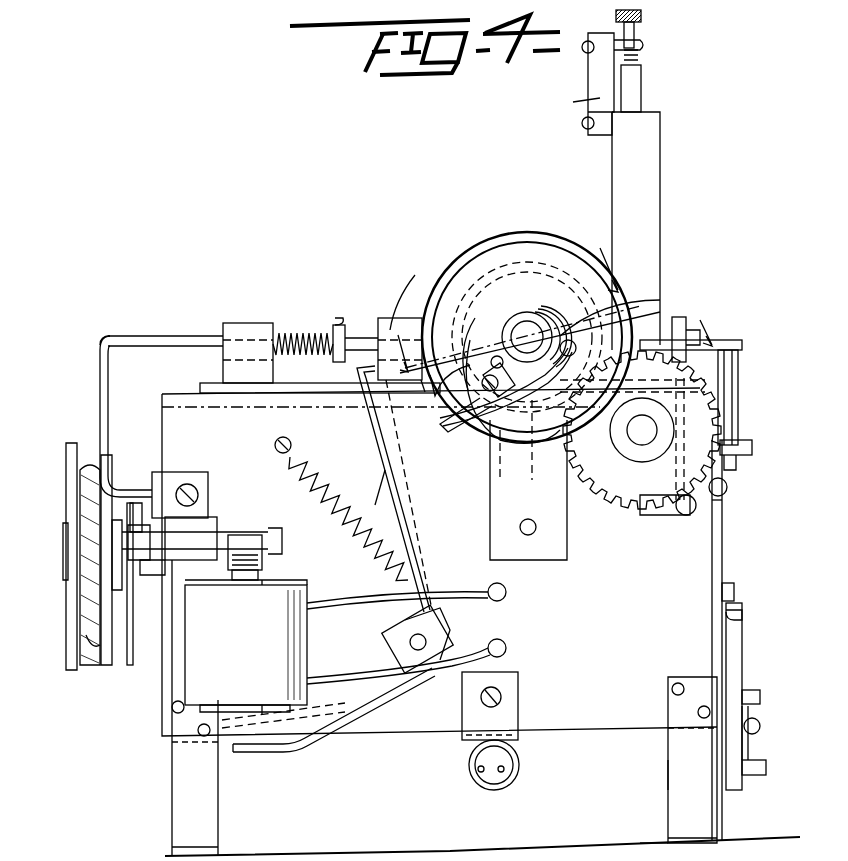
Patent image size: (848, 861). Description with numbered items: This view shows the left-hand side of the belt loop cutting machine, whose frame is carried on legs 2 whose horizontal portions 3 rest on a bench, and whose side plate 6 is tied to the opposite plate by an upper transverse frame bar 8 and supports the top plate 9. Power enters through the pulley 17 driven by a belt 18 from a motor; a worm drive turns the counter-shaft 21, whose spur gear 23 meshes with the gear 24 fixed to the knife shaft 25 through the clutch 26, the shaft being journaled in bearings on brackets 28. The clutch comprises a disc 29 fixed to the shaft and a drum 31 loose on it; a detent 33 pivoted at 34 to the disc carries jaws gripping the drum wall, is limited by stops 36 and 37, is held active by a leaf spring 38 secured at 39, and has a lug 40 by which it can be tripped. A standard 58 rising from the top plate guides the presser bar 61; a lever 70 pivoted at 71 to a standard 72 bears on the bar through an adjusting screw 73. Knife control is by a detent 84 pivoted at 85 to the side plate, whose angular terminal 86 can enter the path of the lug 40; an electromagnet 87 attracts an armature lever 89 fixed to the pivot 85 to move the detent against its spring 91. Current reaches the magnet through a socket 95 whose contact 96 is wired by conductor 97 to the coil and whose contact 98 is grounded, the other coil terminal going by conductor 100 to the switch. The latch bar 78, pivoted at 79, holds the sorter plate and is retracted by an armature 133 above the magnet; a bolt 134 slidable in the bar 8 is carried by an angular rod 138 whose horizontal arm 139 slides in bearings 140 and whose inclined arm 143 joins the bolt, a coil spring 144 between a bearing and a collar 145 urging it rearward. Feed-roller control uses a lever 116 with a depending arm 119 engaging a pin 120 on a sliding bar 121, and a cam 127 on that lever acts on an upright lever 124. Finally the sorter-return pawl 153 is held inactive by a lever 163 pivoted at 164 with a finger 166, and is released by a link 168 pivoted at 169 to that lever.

The legs 2 is at (668, 804).
The horizontal portions 3 is at (648, 831).
The side plate 6 is at (618, 730).
The upper front transverse bar 8 is at (166, 470).
The top plate 9 is at (528, 298).
The pulley 17 is at (66, 652).
The belt 18 is at (94, 650).
The counter-shaft 21 is at (640, 432).
The spur gear 23 is at (630, 500).
The gear 24 is at (498, 250).
The knife shaft 25 is at (530, 332).
The clutch 26 is at (430, 278).
The bracket 28 is at (492, 530).
The disc 29 is at (548, 258).
The drum 31 is at (523, 234).
The detent 33 is at (480, 426).
The pivot 34 is at (511, 376).
The stop 36 is at (502, 335).
The stop 37 is at (516, 451).
The leaf spring 38 is at (538, 410).
The securing point 39 is at (665, 300).
The lug 40 is at (436, 400).
The standard 58 is at (662, 218).
The presser bar 61 is at (634, 98).
The lever 70 is at (645, 52).
The pivot 71 is at (580, 50).
The standard 72 is at (565, 102).
The screw 73 is at (640, 30).
The latch bar 78 is at (198, 512).
The pivot 79 is at (282, 535).
The detent 84 is at (405, 512).
The pivot 85 is at (428, 640).
The angular upper terminal 86 is at (360, 400).
The electromagnet 87 is at (200, 675).
The armature lever 89 is at (346, 718).
The spring 91 is at (342, 500).
The socket 95 is at (490, 790).
The contact 96 is at (503, 772).
The conductor 97 is at (352, 608).
The contact 98 is at (478, 772).
The conductor 100 is at (356, 678).
The lever 116 is at (724, 335).
The arm 119 is at (740, 382).
The pin 120 is at (748, 458).
The bar 121 is at (730, 506).
The lever 124 is at (742, 360).
The cam 127 is at (700, 320).
The armature 133 is at (262, 550).
The bolt 134 is at (132, 490).
The angular rod 138 is at (102, 336).
The horizontal arm 139 is at (178, 333).
The bearings 140 is at (258, 320).
The inclined arm 143 is at (100, 406).
The coil spring 144 is at (292, 322).
The collar 145 is at (340, 318).
The pawl 153 is at (736, 592).
The lever 163 is at (744, 666).
The pivot 164 is at (756, 775).
The finger 166 is at (742, 624).
The link 168 is at (752, 740).
The pivot connection 169 is at (760, 726).